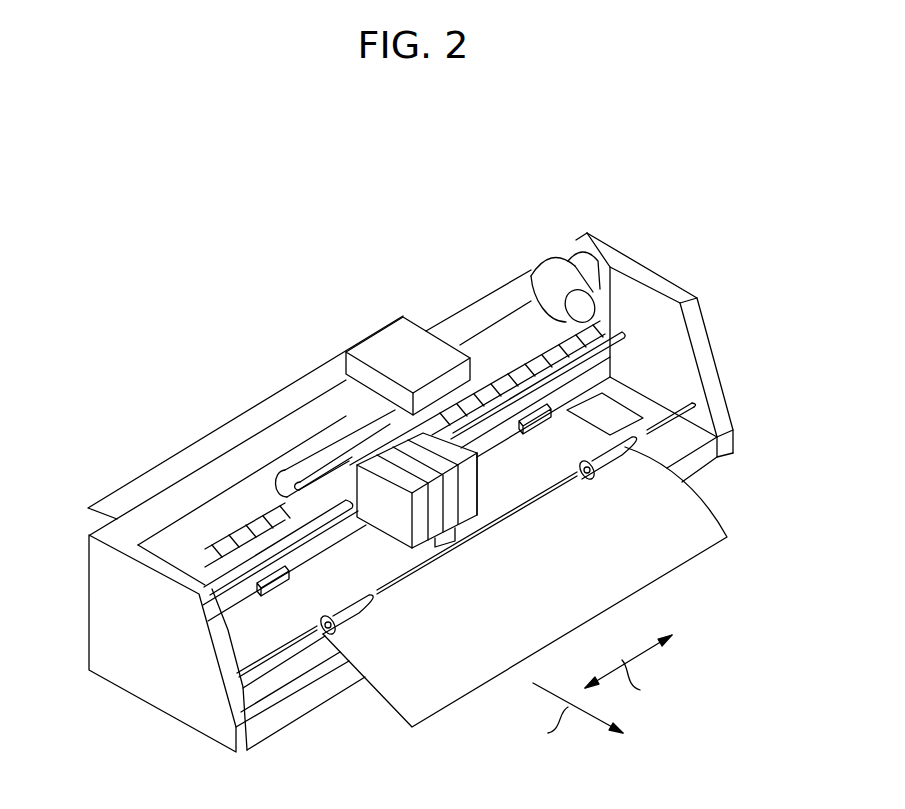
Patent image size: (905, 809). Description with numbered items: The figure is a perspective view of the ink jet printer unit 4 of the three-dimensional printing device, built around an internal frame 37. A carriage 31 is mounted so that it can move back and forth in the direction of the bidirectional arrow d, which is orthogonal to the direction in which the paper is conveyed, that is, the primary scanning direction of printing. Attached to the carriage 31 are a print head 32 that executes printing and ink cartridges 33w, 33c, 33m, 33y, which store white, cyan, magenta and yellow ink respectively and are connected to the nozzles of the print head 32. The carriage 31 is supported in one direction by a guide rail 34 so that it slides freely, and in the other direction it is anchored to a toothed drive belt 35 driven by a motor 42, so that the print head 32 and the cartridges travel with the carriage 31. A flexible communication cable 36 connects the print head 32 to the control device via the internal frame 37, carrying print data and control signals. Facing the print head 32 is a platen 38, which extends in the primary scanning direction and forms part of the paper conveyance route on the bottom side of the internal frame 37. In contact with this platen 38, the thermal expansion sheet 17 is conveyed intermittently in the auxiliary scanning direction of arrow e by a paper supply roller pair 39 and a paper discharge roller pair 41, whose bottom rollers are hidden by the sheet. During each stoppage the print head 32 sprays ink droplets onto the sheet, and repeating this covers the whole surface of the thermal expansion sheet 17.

The ink jet printer unit 4 is at (158, 341).
The thermal expansion sheet 17 is at (132, 490).
The carriage 31 is at (353, 457).
The print head 32 is at (428, 548).
The ink cartridge 33w is at (377, 458).
The ink cartridge 33c is at (397, 452).
The ink cartridge 33m is at (412, 448).
The ink cartridge 33y is at (427, 435).
The guide rail 34 is at (627, 347).
The toothed drive belt 35 is at (252, 518).
The flexible communication cable 36 is at (322, 448).
The internal frame 37 is at (145, 557).
The platen 38 is at (250, 637).
The paper supply roller pair 39 is at (283, 583).
The paper discharge roller pair 41 is at (352, 617).
The motor 42 is at (553, 283).